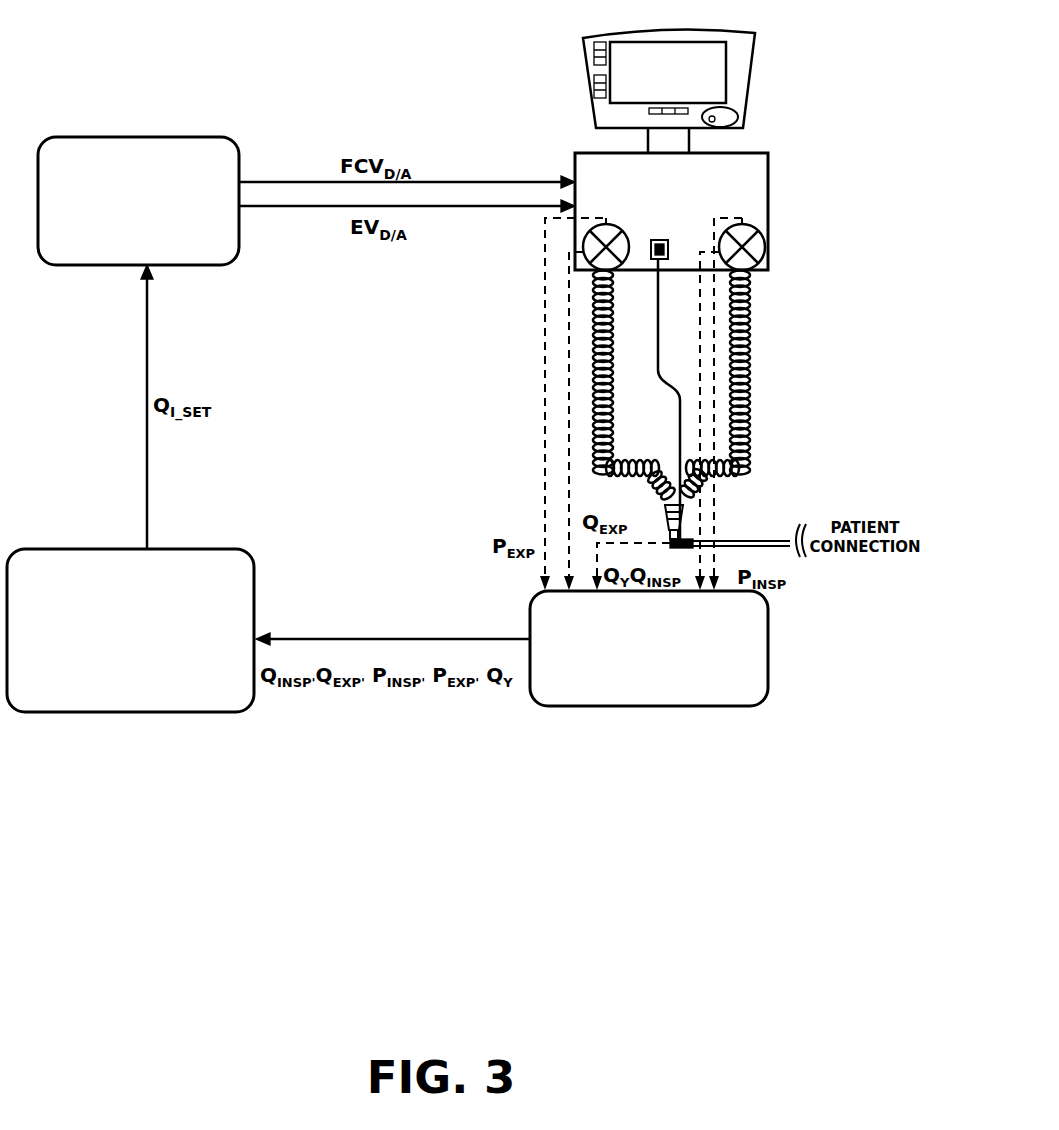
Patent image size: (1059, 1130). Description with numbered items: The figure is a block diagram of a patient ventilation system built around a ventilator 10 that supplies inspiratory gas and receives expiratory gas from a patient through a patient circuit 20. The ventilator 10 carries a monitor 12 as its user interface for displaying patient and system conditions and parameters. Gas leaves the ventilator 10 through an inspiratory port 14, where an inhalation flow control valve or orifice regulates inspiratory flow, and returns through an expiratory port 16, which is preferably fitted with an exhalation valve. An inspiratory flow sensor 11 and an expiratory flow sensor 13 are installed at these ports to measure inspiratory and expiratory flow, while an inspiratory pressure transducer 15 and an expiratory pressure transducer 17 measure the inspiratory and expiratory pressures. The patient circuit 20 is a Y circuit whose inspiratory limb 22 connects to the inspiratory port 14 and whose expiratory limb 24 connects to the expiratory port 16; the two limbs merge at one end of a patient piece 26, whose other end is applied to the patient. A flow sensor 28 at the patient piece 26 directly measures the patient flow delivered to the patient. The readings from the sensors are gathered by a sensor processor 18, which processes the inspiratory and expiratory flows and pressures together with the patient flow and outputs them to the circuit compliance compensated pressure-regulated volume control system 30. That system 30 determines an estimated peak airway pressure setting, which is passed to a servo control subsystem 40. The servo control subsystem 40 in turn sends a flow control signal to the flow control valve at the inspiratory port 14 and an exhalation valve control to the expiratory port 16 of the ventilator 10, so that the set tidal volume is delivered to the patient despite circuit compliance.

The ventilator 10 is at (688, 198).
The inspiratory flow sensor 11 is at (703, 409).
The monitor 12 is at (669, 78).
The expiratory flow sensor 13 is at (565, 410).
The inspiratory port 14 is at (757, 247).
The inspiratory pressure transducer 15 is at (736, 394).
The expiratory port 16 is at (615, 243).
The expiratory pressure transducer 17 is at (578, 392).
The sensor processor 18 is at (649, 648).
The patient circuit 20 is at (593, 372).
The inspiratory limb 22 is at (750, 412).
The expiratory limb 24 is at (648, 399).
The patient piece 26 is at (653, 495).
The flow sensor 28 is at (668, 551).
The circuit compliance compensated pressure-regulated volume control system 30 is at (130, 630).
The servo control subsystem 40 is at (138, 201).